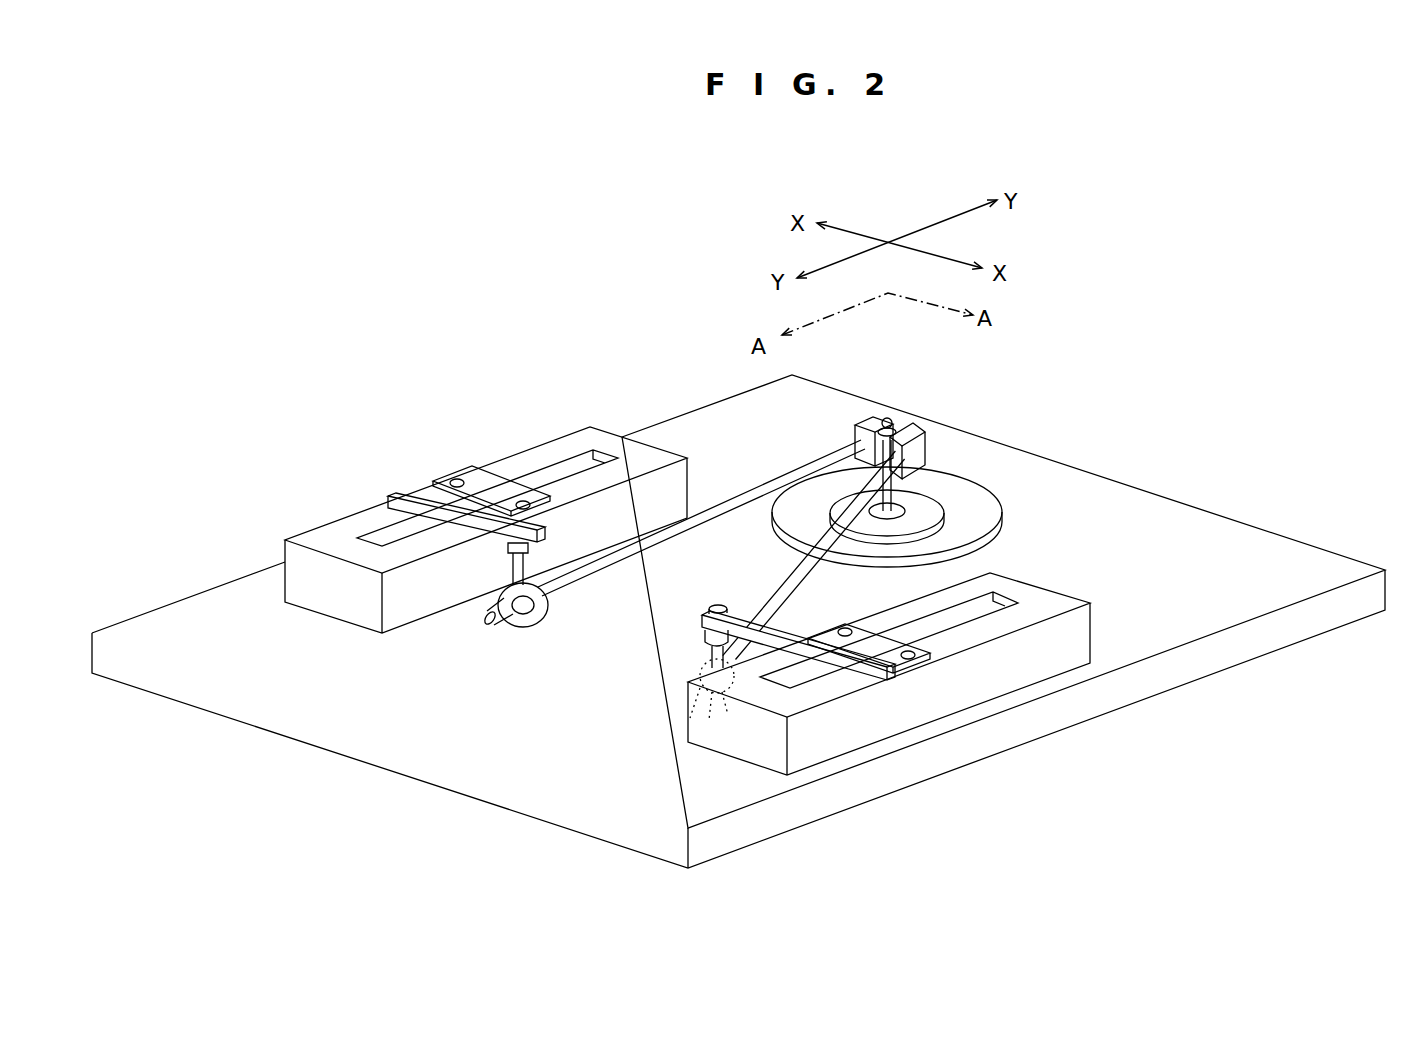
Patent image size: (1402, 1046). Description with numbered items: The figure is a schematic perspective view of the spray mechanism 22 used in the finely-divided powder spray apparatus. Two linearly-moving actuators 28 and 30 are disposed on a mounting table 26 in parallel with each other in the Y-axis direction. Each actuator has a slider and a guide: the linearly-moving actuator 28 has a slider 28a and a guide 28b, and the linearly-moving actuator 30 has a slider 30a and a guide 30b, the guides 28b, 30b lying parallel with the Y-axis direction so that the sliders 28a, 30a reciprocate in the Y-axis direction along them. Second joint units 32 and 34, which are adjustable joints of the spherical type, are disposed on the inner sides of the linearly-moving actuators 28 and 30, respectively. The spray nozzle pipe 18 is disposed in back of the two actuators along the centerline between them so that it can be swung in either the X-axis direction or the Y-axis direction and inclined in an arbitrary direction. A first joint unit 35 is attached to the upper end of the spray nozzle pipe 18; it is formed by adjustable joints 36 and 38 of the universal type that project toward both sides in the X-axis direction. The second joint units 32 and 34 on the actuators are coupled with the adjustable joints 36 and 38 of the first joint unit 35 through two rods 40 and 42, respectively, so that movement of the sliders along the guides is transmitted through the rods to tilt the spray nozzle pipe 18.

The spray nozzle pipe 18 is at (1002, 490).
The spray mechanism 22 is at (713, 373).
The mounting table 26 is at (417, 843).
The linearly-moving actuator 28 is at (752, 735).
The slider 28a is at (933, 665).
The guide 28b is at (1017, 603).
The linearly-moving actuator 30 is at (345, 530).
The slider 30a is at (433, 475).
The guide 30b is at (553, 453).
The second joint unit 32 is at (687, 698).
The second joint unit 34 is at (538, 625).
The first joint unit 35 is at (1046, 407).
The adjustable joint 36 is at (910, 425).
The adjustable joint 38 is at (883, 412).
The rod 40 is at (797, 577).
The rod 42 is at (743, 497).